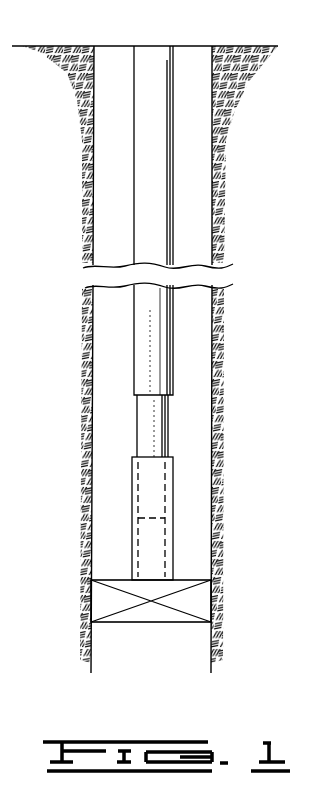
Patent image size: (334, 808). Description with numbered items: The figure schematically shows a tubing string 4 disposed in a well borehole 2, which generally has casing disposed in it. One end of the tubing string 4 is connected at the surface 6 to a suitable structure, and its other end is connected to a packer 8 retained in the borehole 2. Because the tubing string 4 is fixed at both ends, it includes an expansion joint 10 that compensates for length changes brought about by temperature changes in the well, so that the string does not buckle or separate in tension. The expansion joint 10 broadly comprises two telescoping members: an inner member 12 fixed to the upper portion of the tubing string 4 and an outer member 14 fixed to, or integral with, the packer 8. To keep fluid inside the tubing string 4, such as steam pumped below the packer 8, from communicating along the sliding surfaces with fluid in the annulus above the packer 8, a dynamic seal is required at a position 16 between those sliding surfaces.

The well borehole 2 is at (213, 159).
The tubing string 4 is at (122, 324).
The surface 6 is at (223, 46).
The packer 8 is at (193, 580).
The expansion joint 10 is at (203, 441).
The inner member 12 is at (153, 422).
The outer member 14 is at (158, 530).
The seal position 16 is at (127, 485).